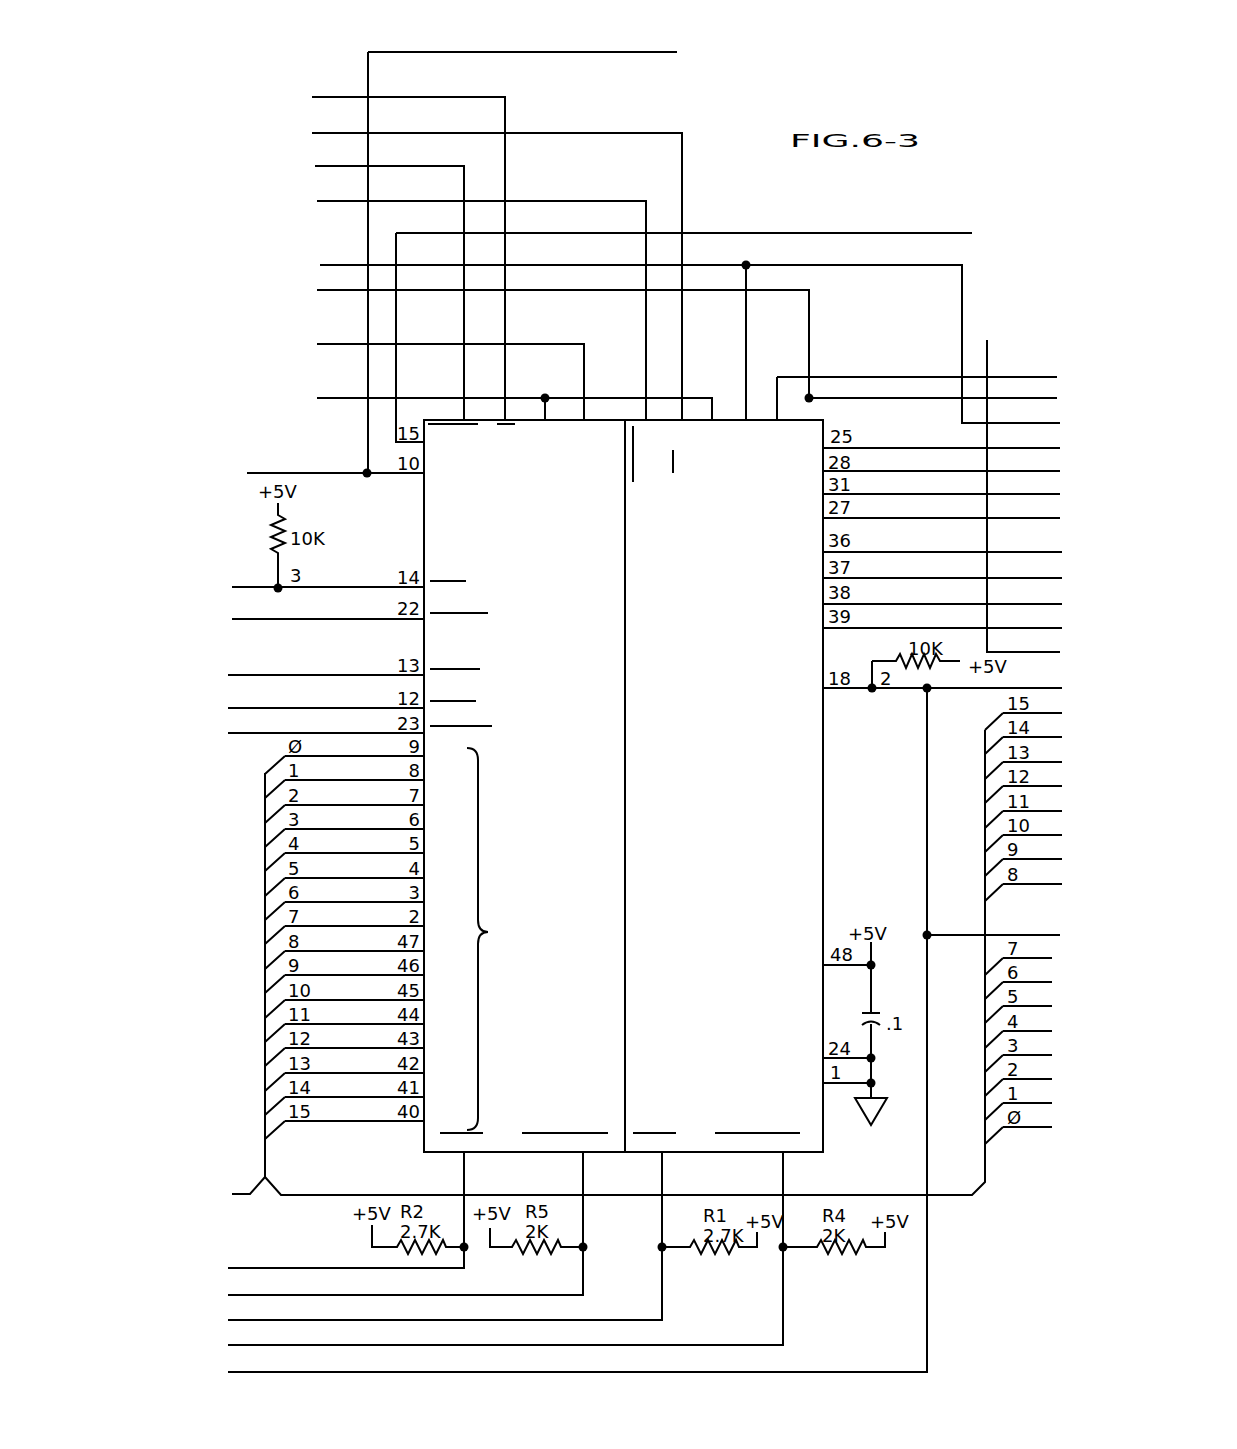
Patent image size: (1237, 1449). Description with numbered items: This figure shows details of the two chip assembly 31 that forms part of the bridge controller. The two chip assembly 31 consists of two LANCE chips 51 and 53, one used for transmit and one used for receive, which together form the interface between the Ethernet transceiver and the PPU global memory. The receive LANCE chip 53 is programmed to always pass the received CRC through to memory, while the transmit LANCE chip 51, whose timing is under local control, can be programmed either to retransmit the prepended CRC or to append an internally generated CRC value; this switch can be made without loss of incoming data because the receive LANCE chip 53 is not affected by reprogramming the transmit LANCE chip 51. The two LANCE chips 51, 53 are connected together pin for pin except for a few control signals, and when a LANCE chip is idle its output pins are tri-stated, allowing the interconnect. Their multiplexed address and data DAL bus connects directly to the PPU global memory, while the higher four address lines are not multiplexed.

The two chip assembly 31 is at (472, 43).
The receive LANCE chip 53 is at (585, 638).
The transmit LANCE chip 51 is at (706, 638).